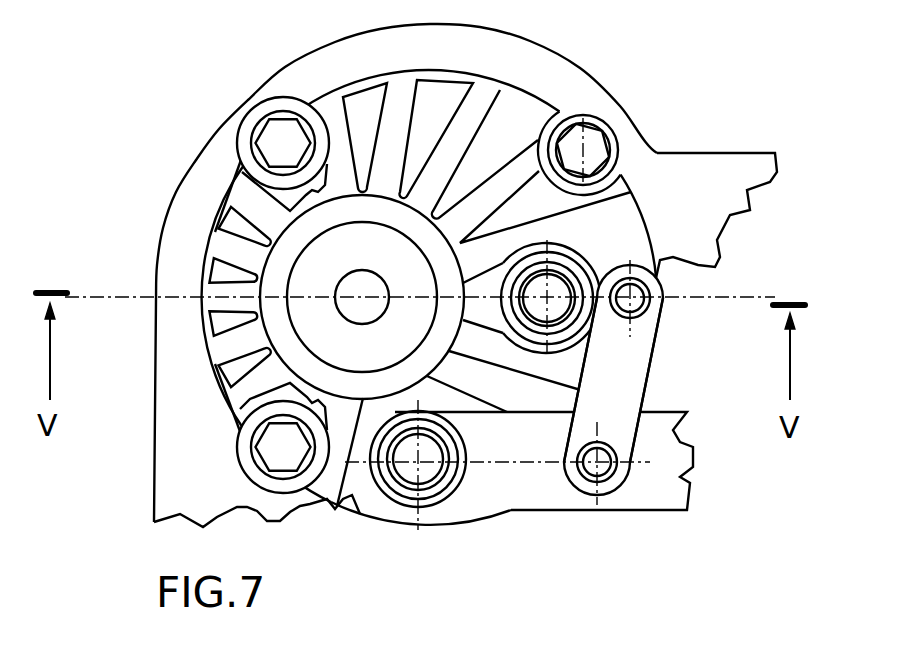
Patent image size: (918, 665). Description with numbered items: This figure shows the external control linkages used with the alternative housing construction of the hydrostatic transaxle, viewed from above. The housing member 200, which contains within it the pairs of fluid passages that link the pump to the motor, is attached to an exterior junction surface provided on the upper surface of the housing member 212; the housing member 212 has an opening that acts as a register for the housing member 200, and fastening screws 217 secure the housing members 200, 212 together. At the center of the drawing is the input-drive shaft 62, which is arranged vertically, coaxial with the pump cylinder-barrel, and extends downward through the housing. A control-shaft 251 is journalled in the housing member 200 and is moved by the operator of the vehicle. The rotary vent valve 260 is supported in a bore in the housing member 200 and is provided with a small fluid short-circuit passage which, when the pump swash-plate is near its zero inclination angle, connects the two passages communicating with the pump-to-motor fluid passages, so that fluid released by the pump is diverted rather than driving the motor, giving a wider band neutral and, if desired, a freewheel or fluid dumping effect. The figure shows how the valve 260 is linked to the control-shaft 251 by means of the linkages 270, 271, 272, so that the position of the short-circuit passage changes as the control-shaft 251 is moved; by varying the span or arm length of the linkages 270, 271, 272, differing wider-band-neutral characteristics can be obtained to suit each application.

The housing member 212 is at (482, 58).
The housing member 200 is at (568, 92).
The fastening screws 217 is at (582, 157).
The rotary vent valve 260 is at (557, 290).
The linkage 270 is at (702, 348).
The linkage 271 is at (640, 392).
The linkage 272 is at (552, 500).
The control-shaft 251 is at (452, 437).
The input-drive shaft 62 is at (358, 288).